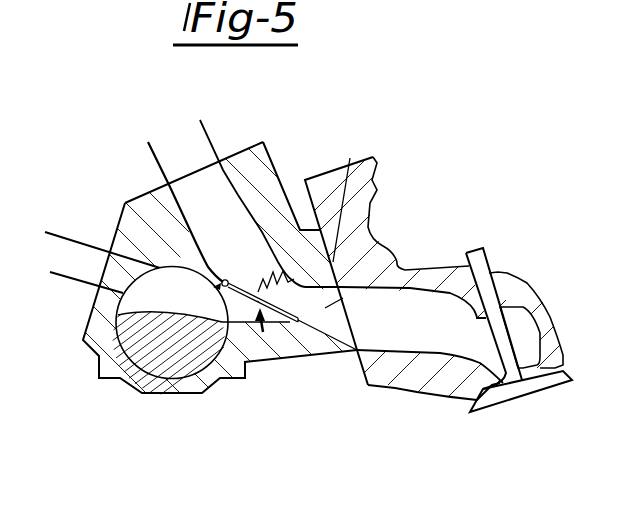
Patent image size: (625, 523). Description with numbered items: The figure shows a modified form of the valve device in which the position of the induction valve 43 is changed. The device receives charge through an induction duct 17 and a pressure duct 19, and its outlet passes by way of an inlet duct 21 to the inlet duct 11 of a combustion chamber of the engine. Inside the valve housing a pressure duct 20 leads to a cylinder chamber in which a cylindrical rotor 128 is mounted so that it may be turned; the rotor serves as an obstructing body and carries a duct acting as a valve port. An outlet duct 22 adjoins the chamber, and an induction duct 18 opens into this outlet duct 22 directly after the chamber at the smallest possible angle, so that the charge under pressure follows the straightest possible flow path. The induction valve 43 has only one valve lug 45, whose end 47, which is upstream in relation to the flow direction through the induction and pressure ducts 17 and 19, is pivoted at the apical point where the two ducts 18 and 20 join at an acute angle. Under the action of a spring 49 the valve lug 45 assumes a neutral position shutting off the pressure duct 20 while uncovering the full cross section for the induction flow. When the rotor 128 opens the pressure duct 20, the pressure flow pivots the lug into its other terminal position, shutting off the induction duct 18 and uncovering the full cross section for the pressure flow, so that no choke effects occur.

The inlet duct 11 is at (513, 274).
The induction duct 17 is at (195, 153).
The induction duct 18 is at (210, 197).
The pressure duct 19 is at (78, 270).
The pressure duct 20 is at (118, 277).
The inlet duct 21 is at (412, 317).
The outlet duct 22 is at (378, 250).
The induction valve 43 is at (273, 323).
The valve lug 45 is at (282, 327).
The end of valve lug 47 is at (228, 278).
The spring 49 is at (350, 158).
The cylindrical rotor 128 is at (173, 347).